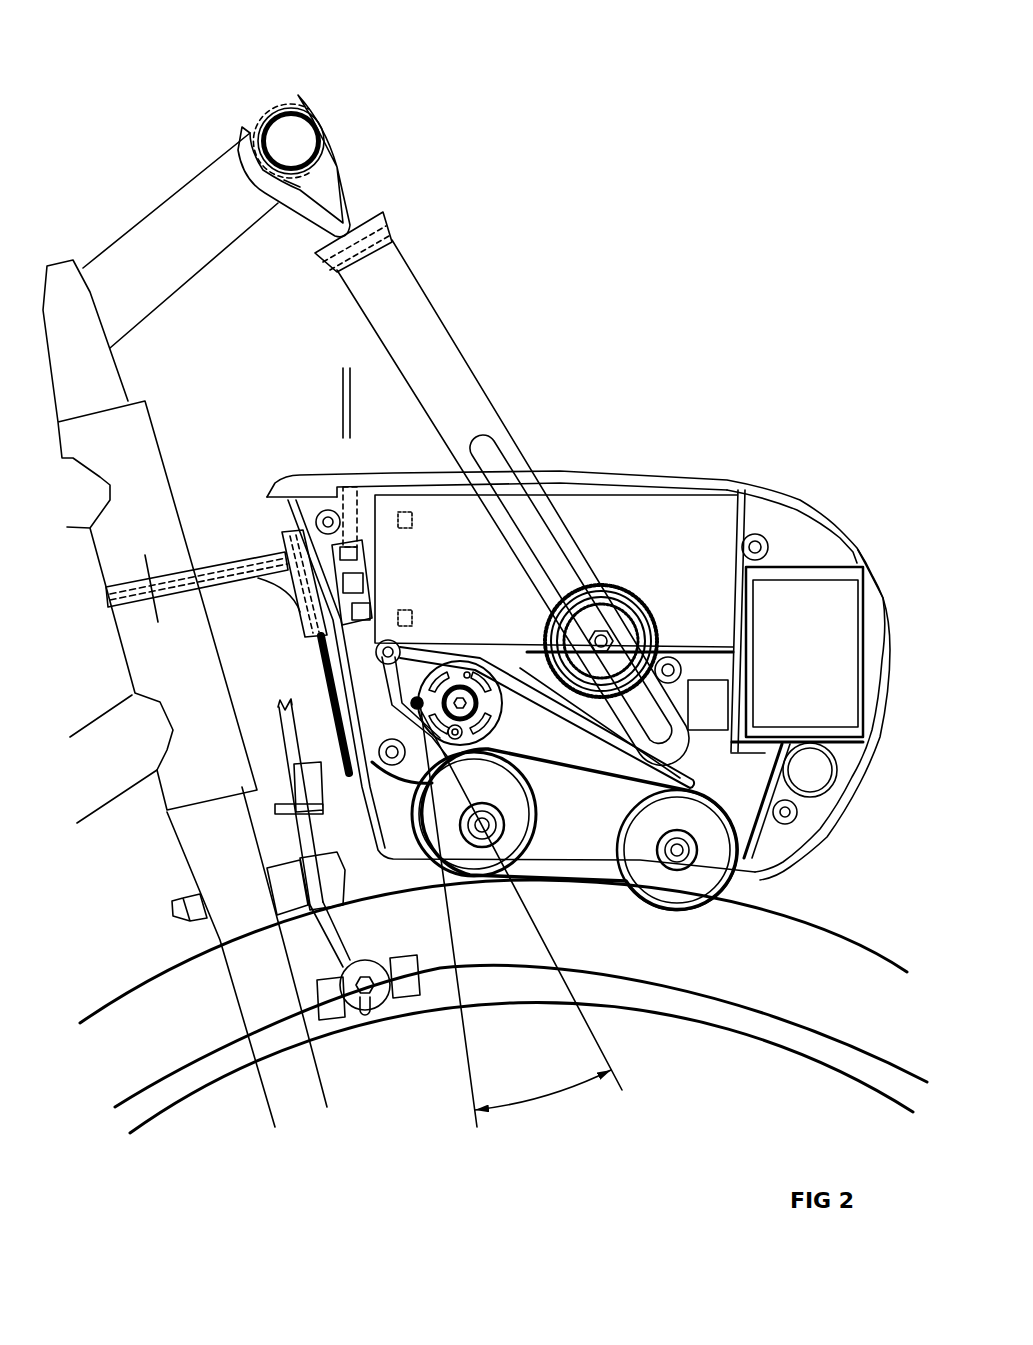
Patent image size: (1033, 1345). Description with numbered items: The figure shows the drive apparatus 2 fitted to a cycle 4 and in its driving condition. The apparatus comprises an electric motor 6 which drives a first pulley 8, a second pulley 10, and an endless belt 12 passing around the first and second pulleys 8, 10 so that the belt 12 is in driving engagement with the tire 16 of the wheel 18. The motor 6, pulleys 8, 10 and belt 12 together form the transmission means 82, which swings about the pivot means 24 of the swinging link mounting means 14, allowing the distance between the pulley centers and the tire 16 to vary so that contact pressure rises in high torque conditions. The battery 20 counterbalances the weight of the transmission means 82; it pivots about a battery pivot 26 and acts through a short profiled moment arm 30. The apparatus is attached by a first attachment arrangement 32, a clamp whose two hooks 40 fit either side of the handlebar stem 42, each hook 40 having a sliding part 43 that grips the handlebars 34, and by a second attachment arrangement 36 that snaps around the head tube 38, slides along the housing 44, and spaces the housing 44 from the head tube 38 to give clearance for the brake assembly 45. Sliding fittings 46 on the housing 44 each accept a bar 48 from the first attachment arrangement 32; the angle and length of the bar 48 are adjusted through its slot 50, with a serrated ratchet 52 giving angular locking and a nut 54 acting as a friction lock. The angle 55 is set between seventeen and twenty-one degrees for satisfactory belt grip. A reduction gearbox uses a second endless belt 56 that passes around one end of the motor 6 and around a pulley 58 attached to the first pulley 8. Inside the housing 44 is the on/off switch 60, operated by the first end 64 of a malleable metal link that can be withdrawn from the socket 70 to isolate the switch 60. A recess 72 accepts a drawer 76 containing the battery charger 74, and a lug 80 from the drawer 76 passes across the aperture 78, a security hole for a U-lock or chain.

The drive apparatus 2 is at (848, 498).
The cycle 4 is at (175, 385).
The electric motor 6 is at (490, 720).
The first pulley 8 is at (633, 838).
The second pulley 10 is at (537, 843).
The endless belt 12 is at (572, 805).
The mounting means 14 is at (400, 90).
The tire 16 is at (823, 963).
The wheel 18 is at (717, 1008).
The battery 20 is at (451, 540).
The pivot means 24 is at (417, 703).
The battery pivot 26 is at (688, 645).
The moment arm 30 is at (385, 640).
The first attachment arrangement 32 is at (393, 230).
The handlebars 34 is at (267, 112).
The second attachment arrangement 36 is at (165, 570).
The head tube 38 is at (165, 673).
The hook 40 is at (352, 158).
The handlebar stem 42 is at (215, 200).
The sliding part 43 is at (322, 102).
The housing 44 is at (626, 475).
The brake assembly 45 is at (400, 983).
The sliding fittings 46 is at (527, 607).
The bar 48 is at (423, 350).
The slot 50 is at (485, 448).
The ratchet 52 is at (625, 597).
The nut 54 is at (596, 635).
The angle 55 is at (550, 1100).
The endless belt 56 is at (548, 682).
The pulley 58 is at (687, 907).
The switch 60 is at (348, 568).
The first end 64 is at (342, 387).
The socket 70 is at (348, 490).
The recess 72 is at (755, 745).
The battery charger 74 is at (792, 641).
The drawer 76 is at (870, 573).
The aperture 78 is at (807, 777).
The lug 80 is at (833, 750).
The transmission means 82 is at (712, 783).